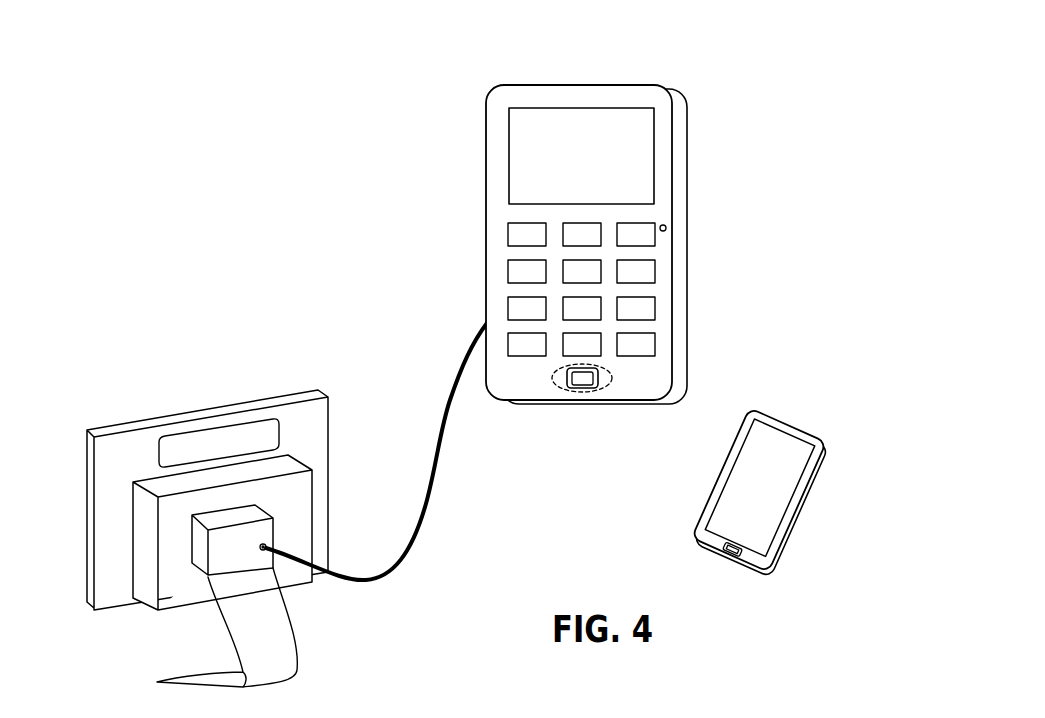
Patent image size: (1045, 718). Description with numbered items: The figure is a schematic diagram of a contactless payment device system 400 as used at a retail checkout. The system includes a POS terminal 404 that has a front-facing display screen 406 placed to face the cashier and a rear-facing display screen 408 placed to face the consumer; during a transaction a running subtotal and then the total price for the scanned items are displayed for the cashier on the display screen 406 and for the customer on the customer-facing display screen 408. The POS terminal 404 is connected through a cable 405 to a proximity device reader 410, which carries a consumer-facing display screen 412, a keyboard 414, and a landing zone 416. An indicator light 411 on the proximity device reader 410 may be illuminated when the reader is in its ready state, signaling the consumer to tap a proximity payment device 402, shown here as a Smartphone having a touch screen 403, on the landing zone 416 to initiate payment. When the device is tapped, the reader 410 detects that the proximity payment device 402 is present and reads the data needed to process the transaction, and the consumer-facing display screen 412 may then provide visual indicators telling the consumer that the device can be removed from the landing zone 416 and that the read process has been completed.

The contactless payment device system 400 is at (852, 74).
The proximity payment device 402 is at (819, 521).
The touch screen 403 is at (773, 438).
The POS terminal 404 is at (330, 440).
The cable 405 is at (430, 512).
The front-facing display screen 406 is at (67, 437).
The rear-facing display screen 408 is at (230, 430).
The proximity device reader 410 is at (585, 84).
The indicator light 411 is at (666, 226).
The consumer-facing display screen 412 is at (647, 157).
The keyboard 414 is at (693, 235).
The landing zone 416 is at (604, 389).